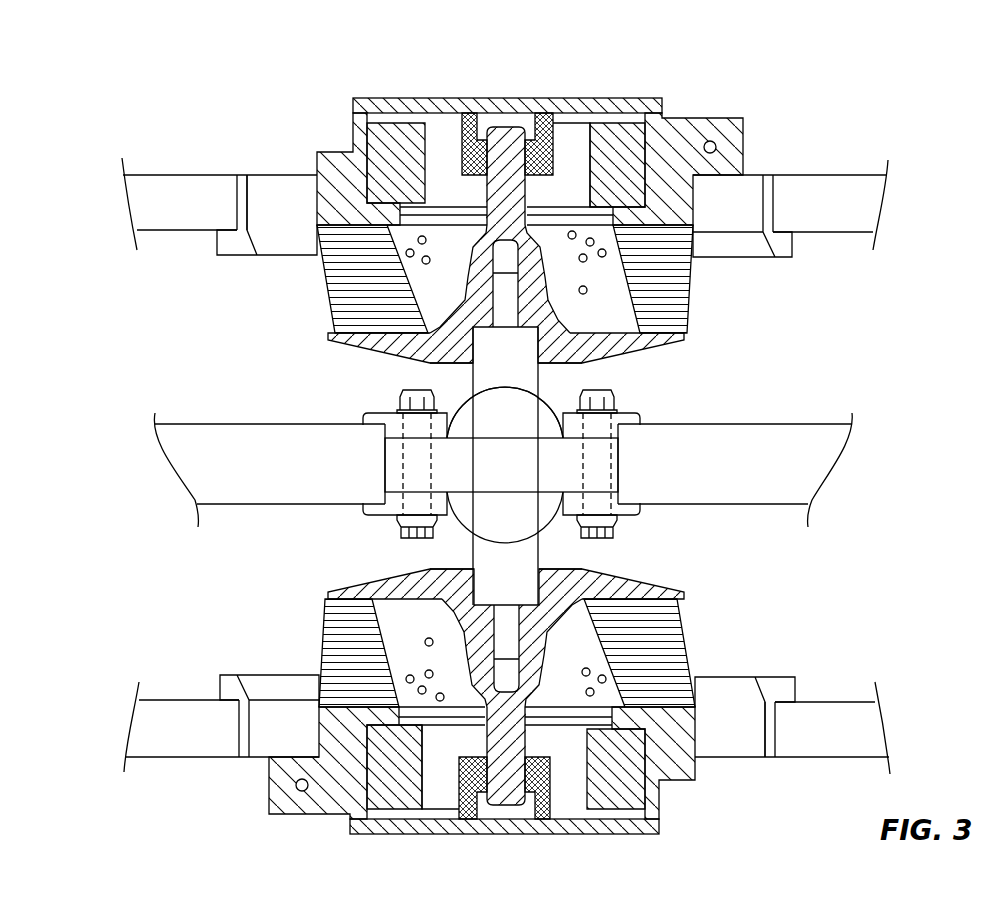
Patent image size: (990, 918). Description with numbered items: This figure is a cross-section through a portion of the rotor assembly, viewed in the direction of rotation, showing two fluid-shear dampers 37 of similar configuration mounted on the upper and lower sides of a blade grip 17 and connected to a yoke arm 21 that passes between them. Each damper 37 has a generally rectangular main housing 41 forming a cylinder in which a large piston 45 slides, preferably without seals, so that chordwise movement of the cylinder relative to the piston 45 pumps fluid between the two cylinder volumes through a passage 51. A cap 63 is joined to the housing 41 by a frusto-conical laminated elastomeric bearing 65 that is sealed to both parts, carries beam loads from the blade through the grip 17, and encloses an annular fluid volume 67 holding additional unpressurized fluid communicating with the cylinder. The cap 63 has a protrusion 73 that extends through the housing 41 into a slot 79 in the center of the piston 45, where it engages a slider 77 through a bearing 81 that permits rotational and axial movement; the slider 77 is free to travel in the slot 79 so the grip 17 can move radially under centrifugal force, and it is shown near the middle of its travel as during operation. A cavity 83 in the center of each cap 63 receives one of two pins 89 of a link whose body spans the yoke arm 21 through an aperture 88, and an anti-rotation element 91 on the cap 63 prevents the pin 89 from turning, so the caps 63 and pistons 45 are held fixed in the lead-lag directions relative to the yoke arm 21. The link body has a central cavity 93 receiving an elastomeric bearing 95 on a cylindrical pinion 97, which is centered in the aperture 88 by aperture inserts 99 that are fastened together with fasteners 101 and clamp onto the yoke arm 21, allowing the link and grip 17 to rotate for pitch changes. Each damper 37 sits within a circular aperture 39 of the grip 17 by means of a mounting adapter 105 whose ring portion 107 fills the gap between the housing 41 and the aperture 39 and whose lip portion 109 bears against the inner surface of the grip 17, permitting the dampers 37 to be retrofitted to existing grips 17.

The grip 17 is at (173, 238).
The yoke arm 21 is at (237, 452).
The damper 37 is at (700, 112).
The aperture 39 is at (755, 196).
The main housing 41 is at (542, 110).
The piston 45 is at (358, 135).
The passage 51 is at (717, 147).
The cap 63 is at (353, 352).
The laminated elastomeric bearing 65 is at (670, 298).
The annular fluid volume 67 is at (677, 343).
The protrusion 73 is at (507, 195).
The slider 77 is at (460, 140).
The slot 79 is at (573, 140).
The bearing 81 is at (530, 177).
The cavity 83 is at (503, 298).
The aperture 88 is at (598, 488).
The pin 89 is at (457, 313).
The anti-rotation element 91 is at (467, 363).
The central cavity 93 is at (487, 392).
The elastomeric bearing 95 is at (530, 423).
The pinion 97 is at (442, 453).
The aperture inserts 99 is at (636, 423).
The fasteners 101 is at (392, 532).
The mounting adapter 105 is at (780, 264).
The ring portion 107 is at (243, 200).
The lip portion 109 is at (227, 248).